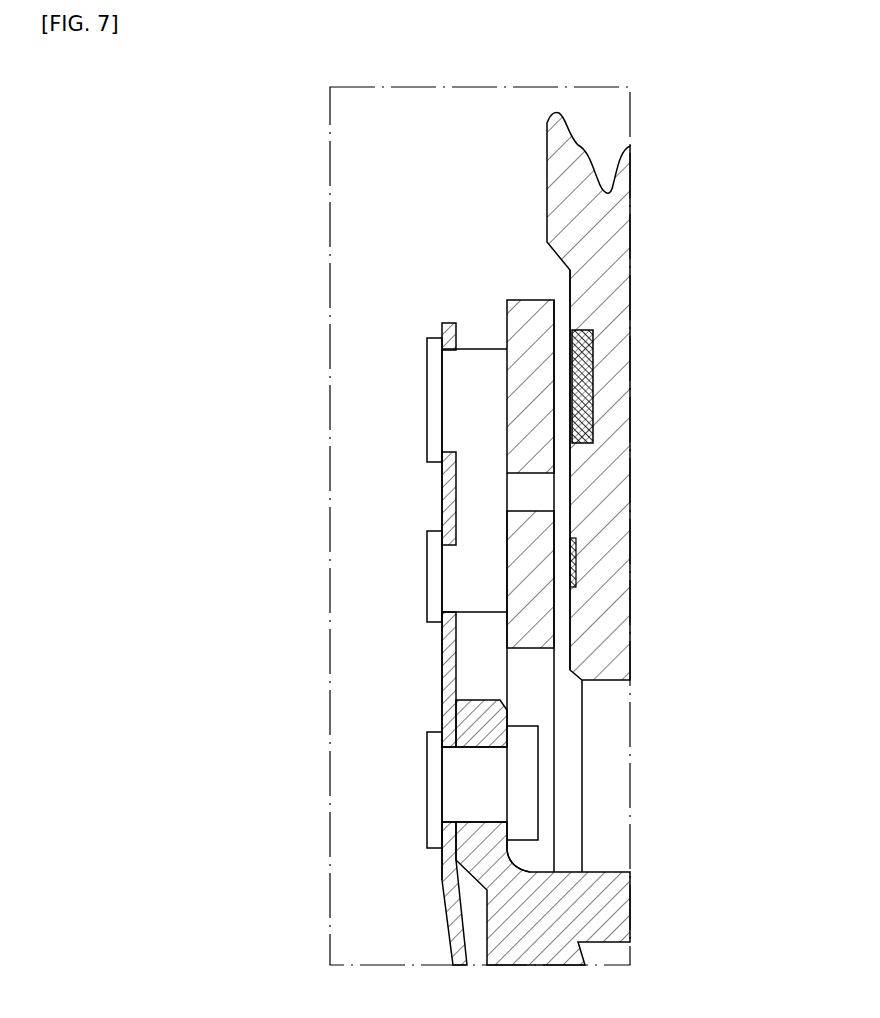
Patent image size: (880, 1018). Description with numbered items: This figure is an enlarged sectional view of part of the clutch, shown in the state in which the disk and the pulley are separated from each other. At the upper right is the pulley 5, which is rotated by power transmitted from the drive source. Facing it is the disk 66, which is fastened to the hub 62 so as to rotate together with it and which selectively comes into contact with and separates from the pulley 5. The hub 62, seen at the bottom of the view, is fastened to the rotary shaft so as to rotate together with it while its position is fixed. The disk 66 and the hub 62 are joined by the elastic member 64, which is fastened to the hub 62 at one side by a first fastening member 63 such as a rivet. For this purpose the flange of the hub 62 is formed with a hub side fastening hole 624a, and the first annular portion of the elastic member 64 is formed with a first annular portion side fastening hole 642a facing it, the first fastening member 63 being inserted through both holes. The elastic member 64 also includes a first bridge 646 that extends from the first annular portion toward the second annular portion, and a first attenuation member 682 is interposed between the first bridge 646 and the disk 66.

The pulley 5 is at (614, 226).
The disk 66 is at (546, 331).
The first bridge 646 is at (448, 475).
The first attenuation member 682 is at (470, 578).
The elastic member 64 is at (432, 657).
The first fastening member 63 is at (417, 788).
The first annular portion side fastening hole 642a is at (446, 750).
The hub side fastening hole 624a is at (465, 822).
The hub 62 is at (612, 904).